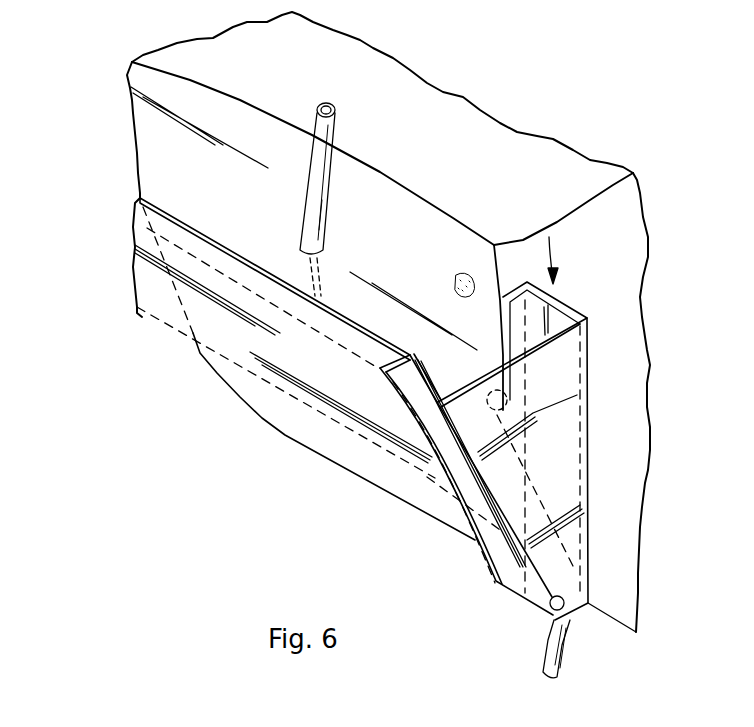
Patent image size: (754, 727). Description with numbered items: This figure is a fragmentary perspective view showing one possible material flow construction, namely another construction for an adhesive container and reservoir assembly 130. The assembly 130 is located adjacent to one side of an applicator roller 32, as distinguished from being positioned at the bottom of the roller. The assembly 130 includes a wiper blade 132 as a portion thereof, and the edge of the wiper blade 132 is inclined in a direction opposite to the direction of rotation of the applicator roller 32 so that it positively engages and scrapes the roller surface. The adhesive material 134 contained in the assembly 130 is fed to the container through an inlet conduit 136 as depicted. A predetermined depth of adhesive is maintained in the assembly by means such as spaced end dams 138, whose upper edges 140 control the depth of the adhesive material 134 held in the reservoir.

The applicator roller 32 is at (622, 598).
The adhesive container and reservoir assembly 130 is at (325, 378).
The wiper blade 132 is at (498, 485).
The adhesive material 134 is at (313, 293).
The inlet conduit 136 is at (335, 141).
The spaced end dams 138 is at (480, 518).
The upper edges 140 is at (530, 392).